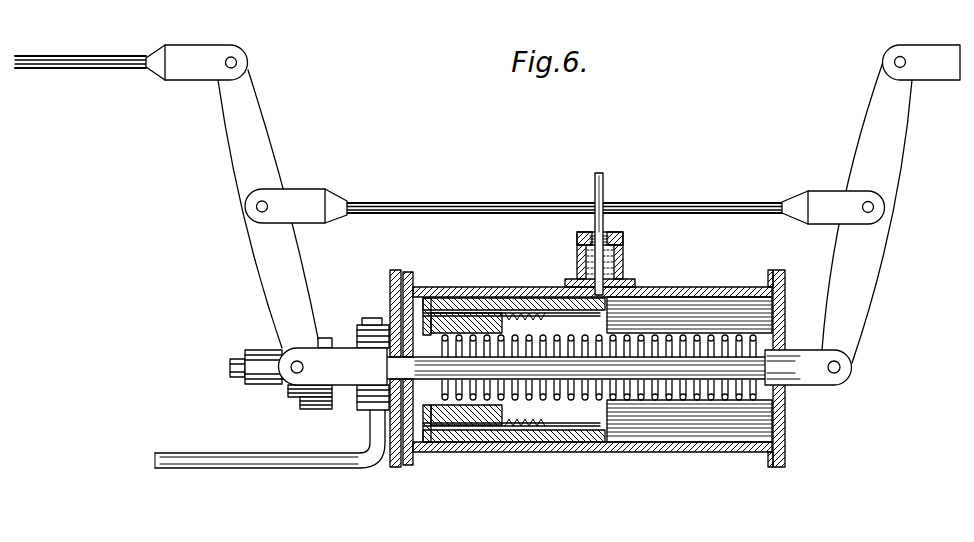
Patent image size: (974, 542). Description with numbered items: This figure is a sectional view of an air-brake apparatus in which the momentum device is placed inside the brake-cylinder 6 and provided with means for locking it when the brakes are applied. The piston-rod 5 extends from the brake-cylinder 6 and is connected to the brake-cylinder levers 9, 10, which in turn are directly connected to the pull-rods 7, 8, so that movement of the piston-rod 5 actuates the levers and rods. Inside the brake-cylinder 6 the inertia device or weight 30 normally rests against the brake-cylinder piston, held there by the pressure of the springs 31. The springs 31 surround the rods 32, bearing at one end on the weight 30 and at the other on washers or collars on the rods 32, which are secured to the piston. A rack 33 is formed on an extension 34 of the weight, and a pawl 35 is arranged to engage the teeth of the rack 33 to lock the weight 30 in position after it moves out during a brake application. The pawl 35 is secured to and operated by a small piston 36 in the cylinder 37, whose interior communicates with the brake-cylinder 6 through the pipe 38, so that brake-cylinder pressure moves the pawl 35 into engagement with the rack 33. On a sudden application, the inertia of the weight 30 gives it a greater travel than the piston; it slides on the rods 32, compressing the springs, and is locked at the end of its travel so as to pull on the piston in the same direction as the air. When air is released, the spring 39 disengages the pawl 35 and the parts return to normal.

The piston-rod 5 is at (818, 386).
The brake-cylinder 6 is at (662, 453).
The pull-rod 7 is at (953, 72).
The pull-rod 8 is at (100, 67).
The brake-cylinder lever 9 is at (868, 135).
The brake-cylinder lever 10 is at (240, 162).
The inertia device or weight 30 is at (490, 442).
The springs 31 is at (533, 316).
The rods 32 is at (461, 312).
The rack 33 is at (526, 312).
The extension of the weight 34 is at (541, 369).
The pawl 35 is at (637, 295).
The small piston 36 is at (624, 247).
The cylinder 37 is at (581, 251).
The pipe 38 is at (604, 183).
The spring 39 is at (624, 264).